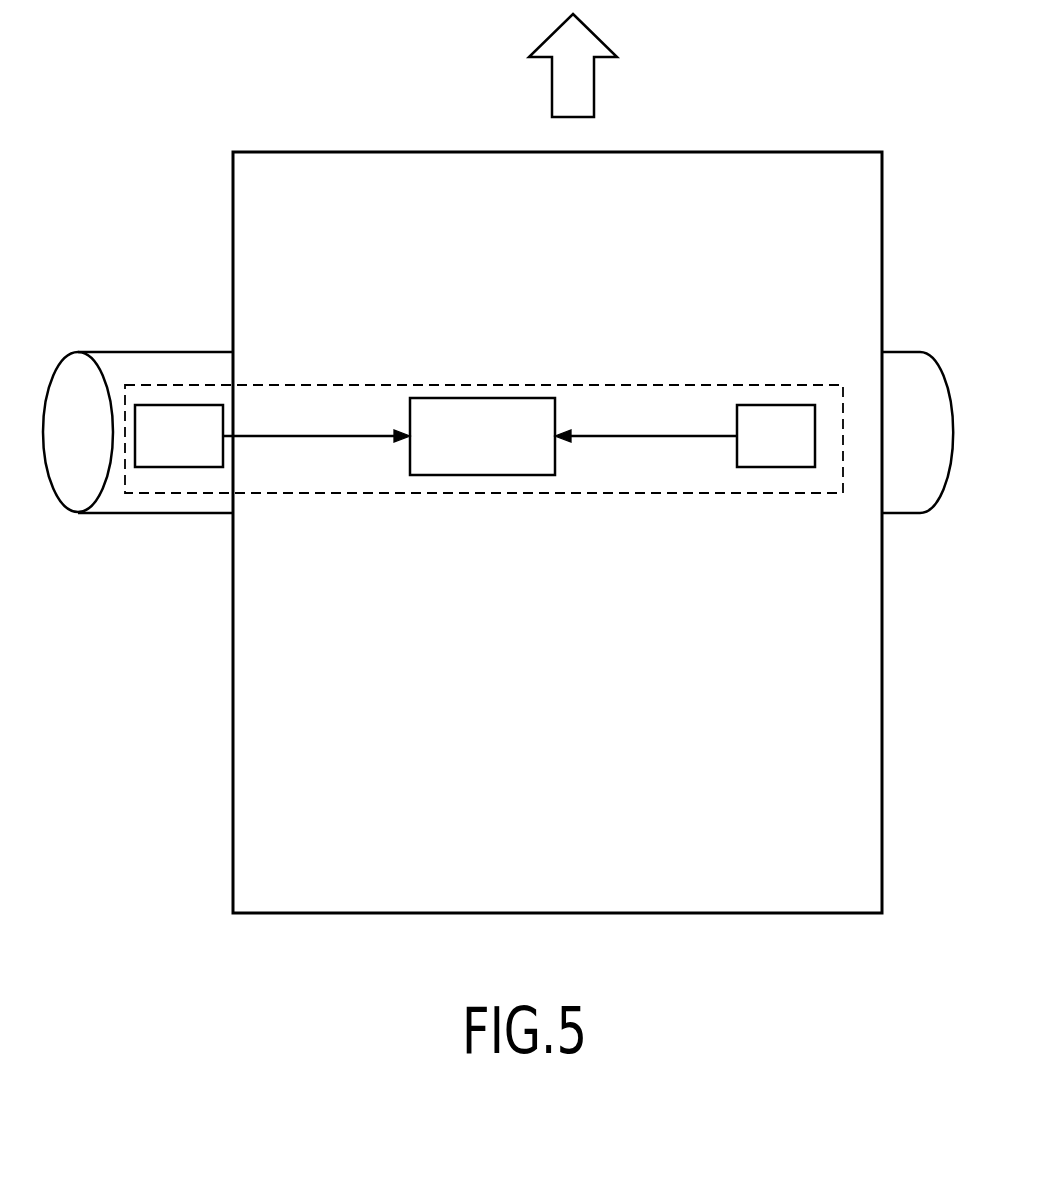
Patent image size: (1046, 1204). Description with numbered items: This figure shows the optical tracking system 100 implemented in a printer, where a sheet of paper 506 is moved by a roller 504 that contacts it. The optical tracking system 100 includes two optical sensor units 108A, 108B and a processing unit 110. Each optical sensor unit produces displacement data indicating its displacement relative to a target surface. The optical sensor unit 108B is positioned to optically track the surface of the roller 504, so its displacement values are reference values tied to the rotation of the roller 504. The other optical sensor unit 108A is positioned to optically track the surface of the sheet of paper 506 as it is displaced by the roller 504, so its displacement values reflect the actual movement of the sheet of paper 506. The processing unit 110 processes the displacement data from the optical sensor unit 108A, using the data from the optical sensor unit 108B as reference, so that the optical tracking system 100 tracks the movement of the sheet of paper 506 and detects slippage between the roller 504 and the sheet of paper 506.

The sheet of paper 506 is at (787, 151).
The roller 504 is at (138, 350).
The optical tracking system 100 is at (643, 385).
The optical sensor unit 108B is at (179, 467).
The processing unit 110 is at (483, 475).
The optical sensor unit 108A is at (777, 467).